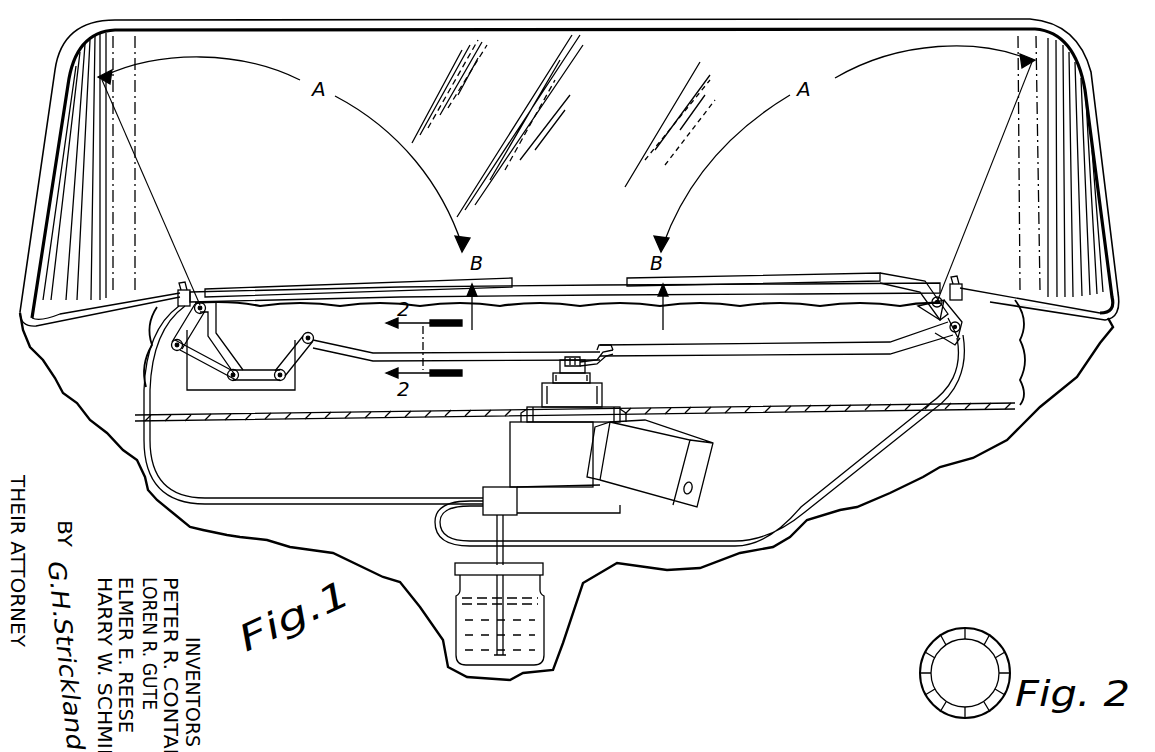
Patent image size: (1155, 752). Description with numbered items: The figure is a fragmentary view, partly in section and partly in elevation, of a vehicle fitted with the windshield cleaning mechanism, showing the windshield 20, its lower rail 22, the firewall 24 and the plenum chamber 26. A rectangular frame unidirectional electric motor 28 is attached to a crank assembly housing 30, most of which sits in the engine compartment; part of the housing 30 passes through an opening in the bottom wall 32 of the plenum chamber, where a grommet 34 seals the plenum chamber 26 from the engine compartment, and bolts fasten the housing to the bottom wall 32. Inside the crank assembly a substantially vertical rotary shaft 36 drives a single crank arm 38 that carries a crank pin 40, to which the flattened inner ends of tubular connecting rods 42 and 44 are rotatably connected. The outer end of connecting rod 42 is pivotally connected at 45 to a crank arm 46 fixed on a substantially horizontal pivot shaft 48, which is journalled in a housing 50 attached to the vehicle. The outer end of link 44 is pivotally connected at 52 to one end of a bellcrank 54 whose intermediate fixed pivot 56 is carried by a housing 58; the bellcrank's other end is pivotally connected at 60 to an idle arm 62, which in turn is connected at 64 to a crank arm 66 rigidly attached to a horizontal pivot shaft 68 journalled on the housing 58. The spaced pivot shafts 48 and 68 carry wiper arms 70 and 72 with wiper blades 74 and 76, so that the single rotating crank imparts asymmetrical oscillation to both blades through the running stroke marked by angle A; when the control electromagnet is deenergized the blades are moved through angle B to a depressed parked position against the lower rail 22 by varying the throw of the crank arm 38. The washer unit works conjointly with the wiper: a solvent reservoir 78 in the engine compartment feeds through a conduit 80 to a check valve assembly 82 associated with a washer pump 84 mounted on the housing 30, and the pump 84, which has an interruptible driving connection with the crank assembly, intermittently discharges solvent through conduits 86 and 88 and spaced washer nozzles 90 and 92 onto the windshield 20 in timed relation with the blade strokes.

In FIG. 1, the windshield 20 is at (1082, 185).
In FIG. 1, the lower rail 22 is at (1070, 316).
In FIG. 1, the firewall 24 is at (1015, 425).
In FIG. 1, the plenum chamber 26 is at (947, 404).
In FIG. 1, the electric motor 28 is at (705, 466).
In FIG. 1, the crank assembly housing 30 is at (508, 450).
In FIG. 1, the bottom wall 32 is at (824, 408).
In FIG. 1, the grommet 34 is at (596, 418).
In FIG. 1, the rotary shaft 36 is at (588, 369).
In FIG. 1, the crank arm 38 is at (622, 366).
In FIG. 1, the crank pin 40 is at (606, 344).
In FIG. 1, the connecting rod 42 is at (822, 346).
In FIG. 1, the connecting rod 44 is at (503, 352).
In FIG. 2, the connecting rod 44 is at (998, 650).
In FIG. 1, the pivotal connection 45 is at (948, 340).
In FIG. 1, the crank arm 46 is at (962, 328).
In FIG. 1, the pivot shaft 48 is at (930, 303).
In FIG. 1, the housing 50 is at (918, 315).
In FIG. 1, the pivotal connection 52 is at (312, 332).
In FIG. 1, the bellcrank 54 is at (298, 355).
In FIG. 1, the fixed pivot 56 is at (286, 380).
In FIG. 1, the housing 58 is at (190, 373).
In FIG. 1, the pivotal connection 60 is at (240, 357).
In FIG. 1, the idle arm 62 is at (220, 372).
In FIG. 1, the pivotal connection 64 is at (170, 347).
In FIG. 1, the crank arm 66 is at (190, 320).
In FIG. 1, the pivot shaft 68 is at (204, 300).
In FIG. 1, the wiper arm 70 is at (902, 282).
In FIG. 1, the wiper arm 72 is at (240, 290).
In FIG. 1, the wiper blade 74 is at (625, 276).
In FIG. 1, the wiper blade 76 is at (512, 278).
In FIG. 1, the solvent reservoir 78 is at (522, 655).
In FIG. 1, the conduit 80 is at (505, 527).
In FIG. 1, the check valve assembly 82 is at (497, 494).
In FIG. 1, the washer pump 84 is at (618, 510).
In FIG. 1, the conduit 86 is at (436, 528).
In FIG. 1, the conduit 88 is at (320, 498).
In FIG. 1, the washer nozzle 90 is at (964, 286).
In FIG. 1, the washer nozzle 92 is at (176, 290).